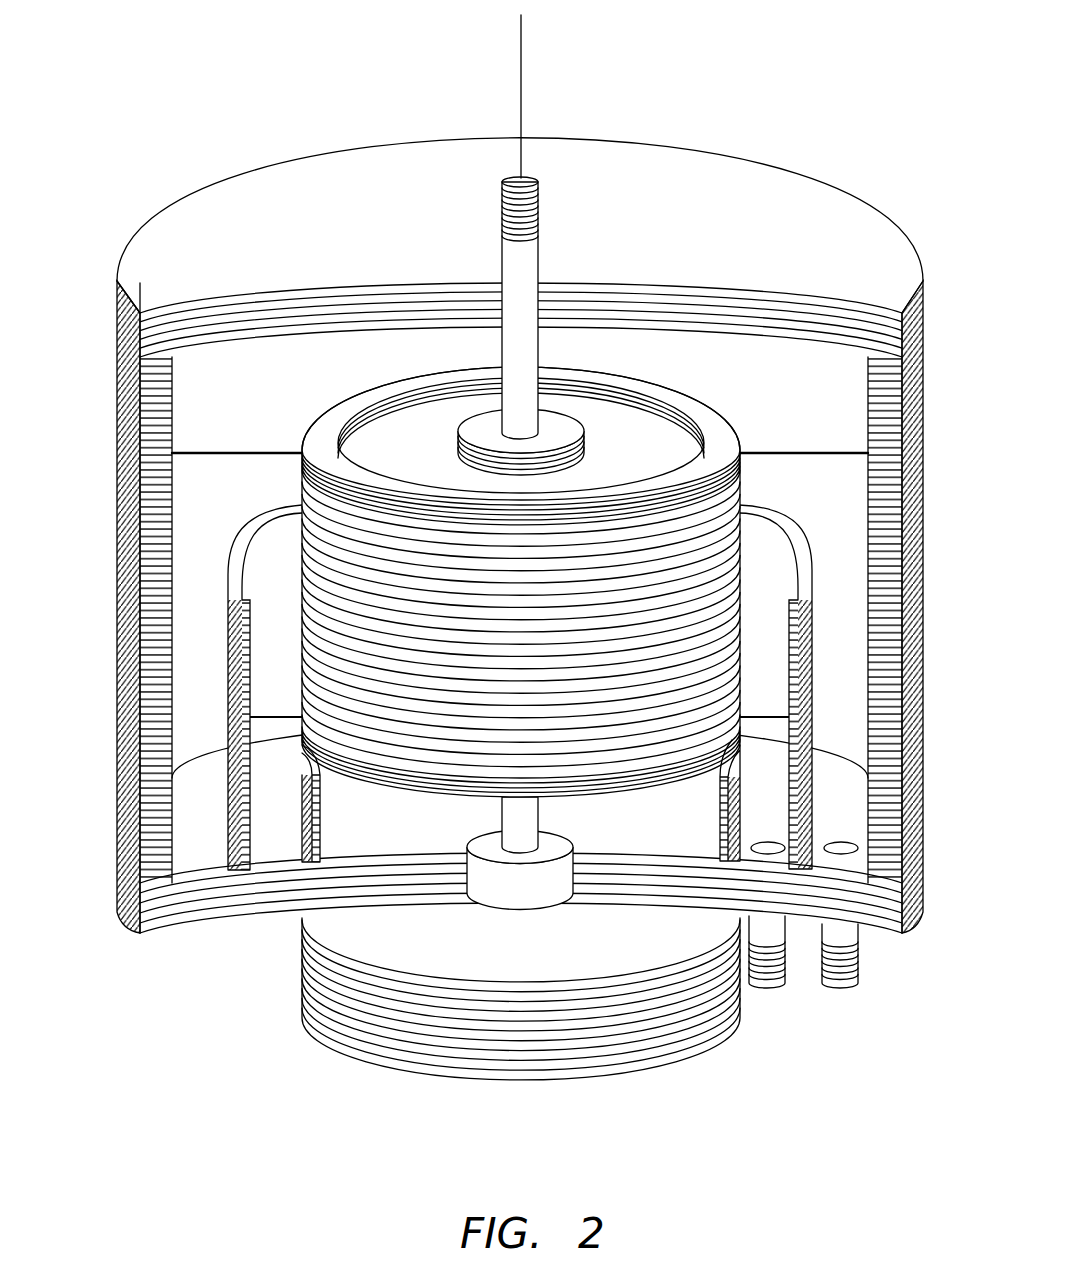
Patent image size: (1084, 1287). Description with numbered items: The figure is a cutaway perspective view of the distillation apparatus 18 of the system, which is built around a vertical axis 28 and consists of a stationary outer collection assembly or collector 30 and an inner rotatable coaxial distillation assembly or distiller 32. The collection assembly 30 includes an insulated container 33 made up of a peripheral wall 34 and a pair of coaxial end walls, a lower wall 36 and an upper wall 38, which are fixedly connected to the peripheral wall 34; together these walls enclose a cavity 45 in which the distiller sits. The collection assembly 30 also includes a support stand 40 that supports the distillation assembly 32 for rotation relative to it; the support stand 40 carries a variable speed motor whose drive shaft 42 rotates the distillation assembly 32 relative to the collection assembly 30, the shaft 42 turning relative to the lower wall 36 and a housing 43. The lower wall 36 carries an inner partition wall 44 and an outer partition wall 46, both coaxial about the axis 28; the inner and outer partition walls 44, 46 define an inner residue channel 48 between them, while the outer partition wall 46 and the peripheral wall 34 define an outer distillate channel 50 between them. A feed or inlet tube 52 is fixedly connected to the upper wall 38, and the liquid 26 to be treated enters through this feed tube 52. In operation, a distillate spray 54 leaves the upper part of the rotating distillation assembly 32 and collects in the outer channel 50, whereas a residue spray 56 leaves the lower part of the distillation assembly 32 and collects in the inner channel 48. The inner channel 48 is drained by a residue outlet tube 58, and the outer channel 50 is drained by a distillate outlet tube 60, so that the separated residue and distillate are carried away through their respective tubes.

The apparatus 18 is at (756, 118).
The liquid 26 is at (521, 116).
The vertical axis 28 is at (523, 40).
The collection assembly 30 is at (856, 190).
The distillation assembly 32 is at (330, 405).
The container 33 is at (117, 604).
The peripheral wall 34 is at (160, 712).
The lower wall 36 is at (187, 932).
The upper wall 38 is at (236, 304).
The support stand 40 is at (493, 1078).
The drive shaft 42 is at (546, 808).
The housing 43 is at (490, 890).
The inner partition wall 44 is at (718, 830).
The cavity 45 is at (222, 490).
The outer partition wall 46 is at (812, 548).
The inner residue channel 48 is at (756, 760).
The outer distillate channel 50 is at (832, 775).
The feed tube 52 is at (539, 236).
The distillate spray 54 is at (845, 452).
The residue spray 56 is at (292, 770).
The residue outlet tube 58 is at (770, 992).
The distillate outlet tube 60 is at (841, 992).